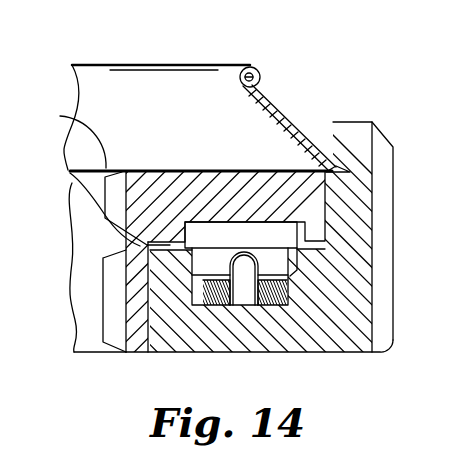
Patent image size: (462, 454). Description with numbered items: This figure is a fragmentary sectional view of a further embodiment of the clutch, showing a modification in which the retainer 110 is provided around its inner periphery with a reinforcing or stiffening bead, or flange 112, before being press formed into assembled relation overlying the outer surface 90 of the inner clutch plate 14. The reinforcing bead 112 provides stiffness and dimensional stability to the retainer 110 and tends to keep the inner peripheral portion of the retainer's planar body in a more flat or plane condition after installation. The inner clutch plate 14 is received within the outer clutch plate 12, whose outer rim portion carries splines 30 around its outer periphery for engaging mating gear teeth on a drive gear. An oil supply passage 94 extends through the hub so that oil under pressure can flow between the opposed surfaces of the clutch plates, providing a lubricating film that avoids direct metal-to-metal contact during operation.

The outer clutch plate 12 is at (330, 325).
The inner clutch plate 14 is at (221, 188).
The splines 30 is at (380, 208).
The outer surface 90 is at (62, 116).
The oil supply passage 94 is at (70, 173).
The retainer 110 is at (278, 108).
The reinforcing bead 112 is at (253, 64).